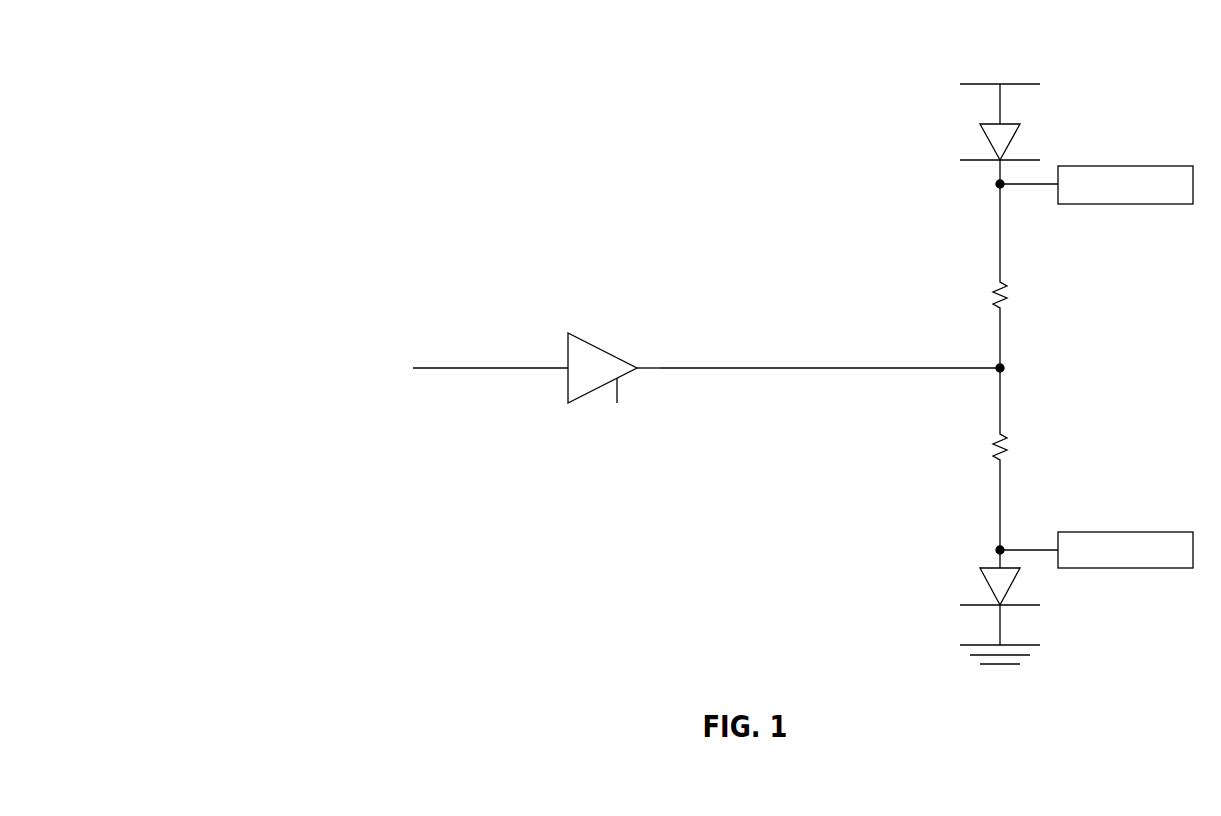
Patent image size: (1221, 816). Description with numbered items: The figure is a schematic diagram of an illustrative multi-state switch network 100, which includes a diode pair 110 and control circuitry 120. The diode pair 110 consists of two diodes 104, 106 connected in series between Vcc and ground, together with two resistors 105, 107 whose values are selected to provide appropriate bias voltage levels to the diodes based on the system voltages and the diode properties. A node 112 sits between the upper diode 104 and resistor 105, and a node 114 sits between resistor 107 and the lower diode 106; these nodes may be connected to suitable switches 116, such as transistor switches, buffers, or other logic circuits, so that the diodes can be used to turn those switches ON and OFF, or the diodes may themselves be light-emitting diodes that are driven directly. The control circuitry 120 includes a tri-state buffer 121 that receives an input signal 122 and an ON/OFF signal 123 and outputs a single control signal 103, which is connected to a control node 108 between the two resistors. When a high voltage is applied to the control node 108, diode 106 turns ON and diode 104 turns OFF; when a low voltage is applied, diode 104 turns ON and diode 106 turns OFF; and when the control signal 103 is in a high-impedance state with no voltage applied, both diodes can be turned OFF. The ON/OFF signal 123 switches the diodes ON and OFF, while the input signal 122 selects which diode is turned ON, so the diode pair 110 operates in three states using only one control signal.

The multi-state switch network 100 is at (255, 41).
The control signal 103 is at (830, 358).
The diode 104 is at (1017, 124).
The resistor 105 is at (1007, 290).
The diode 106 is at (1018, 580).
The resistor 107 is at (1007, 441).
The control node 108 is at (1022, 368).
The diode pair 110 is at (1065, 75).
The node 112 is at (998, 184).
The node 114 is at (998, 550).
The switches 116 is at (1160, 166).
The control circuitry 120 is at (570, 322).
The tri-state buffer 121 is at (613, 352).
The input signal 122 is at (490, 358).
The ON/OFF signal 123 is at (627, 404).